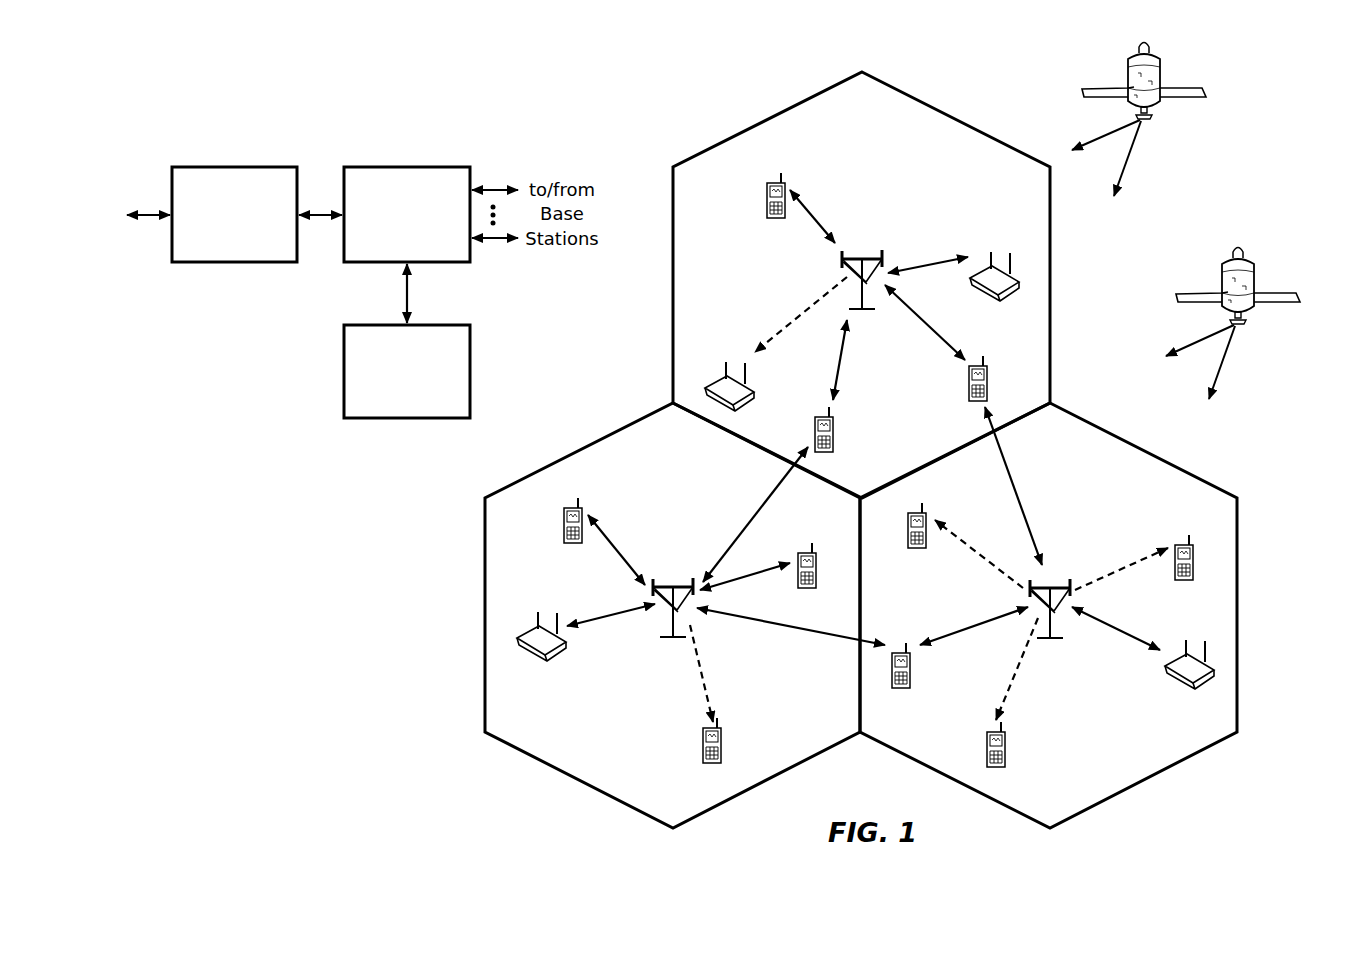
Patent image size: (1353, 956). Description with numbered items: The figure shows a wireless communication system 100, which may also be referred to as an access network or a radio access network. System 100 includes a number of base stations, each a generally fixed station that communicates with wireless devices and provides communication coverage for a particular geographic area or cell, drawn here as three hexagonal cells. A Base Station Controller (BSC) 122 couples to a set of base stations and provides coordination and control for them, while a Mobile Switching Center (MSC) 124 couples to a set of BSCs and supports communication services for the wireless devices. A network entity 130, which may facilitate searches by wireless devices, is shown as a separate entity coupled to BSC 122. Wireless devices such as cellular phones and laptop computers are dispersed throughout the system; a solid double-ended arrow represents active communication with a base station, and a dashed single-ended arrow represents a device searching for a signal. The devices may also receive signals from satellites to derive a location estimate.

The wireless communication system 100 is at (402, 77).
The Base Station Controller (BSC) 122 is at (410, 167).
The Mobile Switching Center (MSC) 124 is at (240, 167).
The network entity 130 is at (437, 325).